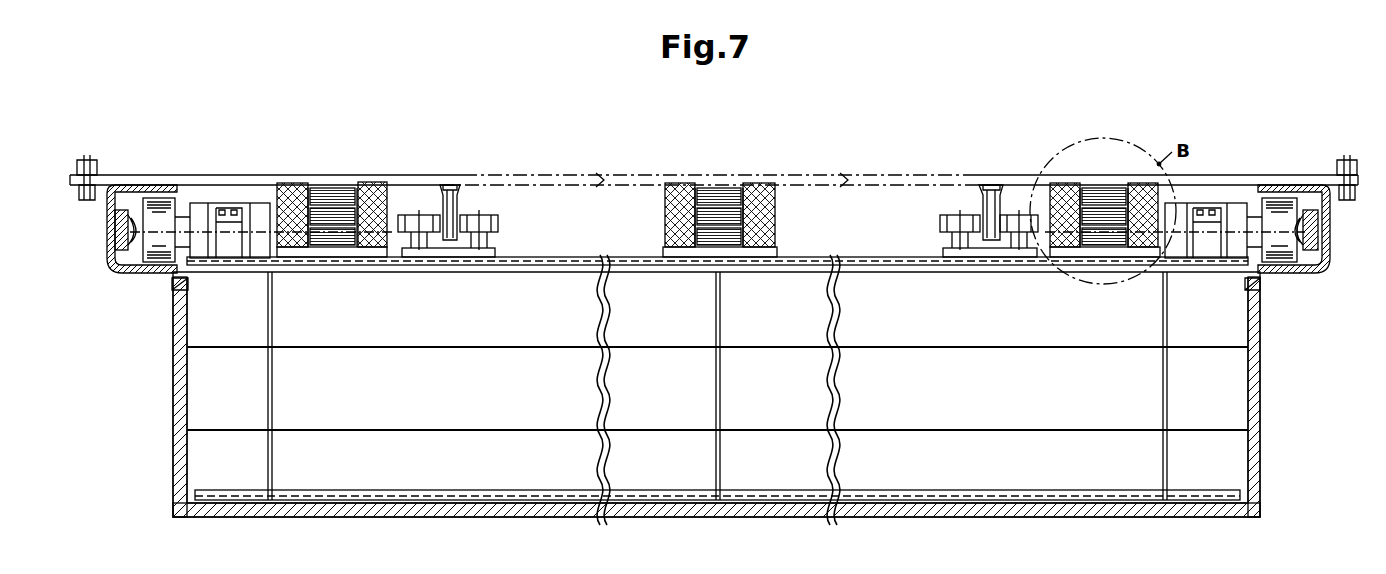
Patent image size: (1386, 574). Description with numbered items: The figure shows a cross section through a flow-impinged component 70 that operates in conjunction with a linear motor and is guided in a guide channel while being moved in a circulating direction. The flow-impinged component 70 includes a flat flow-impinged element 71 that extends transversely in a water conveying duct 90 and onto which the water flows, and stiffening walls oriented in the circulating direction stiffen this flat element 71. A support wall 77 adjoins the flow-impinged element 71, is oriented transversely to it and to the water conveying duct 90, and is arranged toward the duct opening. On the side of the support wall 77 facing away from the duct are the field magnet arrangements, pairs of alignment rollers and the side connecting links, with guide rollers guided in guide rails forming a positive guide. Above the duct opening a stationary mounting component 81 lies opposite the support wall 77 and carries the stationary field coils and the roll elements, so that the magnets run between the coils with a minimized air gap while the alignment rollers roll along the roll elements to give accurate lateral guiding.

The flow-impinged component 70 is at (1256, 327).
The flow-impinged element 71 is at (1050, 468).
The support wall 77 is at (540, 262).
The mounting component 81 is at (866, 177).
The water conveying duct 90 is at (172, 358).